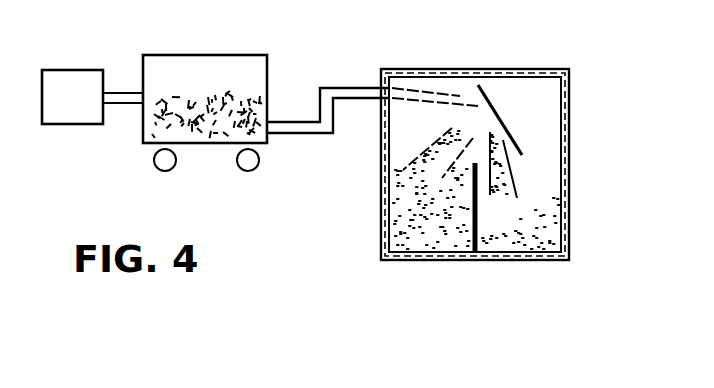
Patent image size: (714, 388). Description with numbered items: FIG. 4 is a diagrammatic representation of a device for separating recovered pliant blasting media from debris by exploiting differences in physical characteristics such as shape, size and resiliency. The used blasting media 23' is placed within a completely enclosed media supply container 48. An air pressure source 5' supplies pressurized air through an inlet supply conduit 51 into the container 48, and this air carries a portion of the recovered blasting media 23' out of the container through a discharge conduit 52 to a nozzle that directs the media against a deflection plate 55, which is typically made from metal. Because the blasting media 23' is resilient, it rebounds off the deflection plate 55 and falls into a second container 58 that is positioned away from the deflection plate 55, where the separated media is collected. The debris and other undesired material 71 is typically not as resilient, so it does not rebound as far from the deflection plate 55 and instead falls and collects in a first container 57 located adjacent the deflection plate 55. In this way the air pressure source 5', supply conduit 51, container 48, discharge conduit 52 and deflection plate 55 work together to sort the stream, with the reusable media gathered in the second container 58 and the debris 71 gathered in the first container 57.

The air pressure source 5' is at (71, 119).
The inlet supply conduit 51 is at (125, 103).
The media supply container 48 is at (230, 55).
The used blasting media 23' is at (207, 150).
The discharge conduit 52 is at (338, 88).
The deflection plate 55 is at (498, 112).
The second container 58 is at (441, 200).
The first container 57 is at (538, 212).
The debris and other undesired material 71 is at (563, 236).